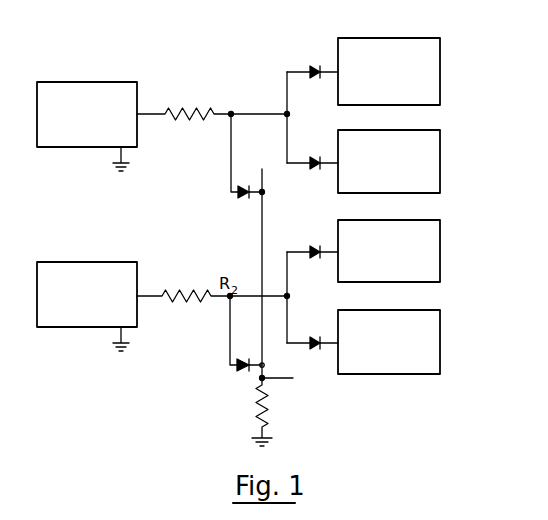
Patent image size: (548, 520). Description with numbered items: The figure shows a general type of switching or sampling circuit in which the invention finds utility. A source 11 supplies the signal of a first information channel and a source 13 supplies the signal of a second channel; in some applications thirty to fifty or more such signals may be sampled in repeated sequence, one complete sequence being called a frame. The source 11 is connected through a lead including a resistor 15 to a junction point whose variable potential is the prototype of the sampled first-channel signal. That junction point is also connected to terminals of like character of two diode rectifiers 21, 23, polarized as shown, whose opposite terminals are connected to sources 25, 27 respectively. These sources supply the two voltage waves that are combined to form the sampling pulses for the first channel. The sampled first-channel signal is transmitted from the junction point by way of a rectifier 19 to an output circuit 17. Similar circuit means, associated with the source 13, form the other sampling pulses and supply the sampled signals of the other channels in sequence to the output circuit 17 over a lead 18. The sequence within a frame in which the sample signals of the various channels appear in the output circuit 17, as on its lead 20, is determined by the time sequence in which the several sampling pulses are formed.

The source 11 is at (67, 82).
The source 13 is at (80, 262).
The resistor 15 is at (165, 111).
The output circuit 17 is at (301, 423).
The lead 18 is at (263, 240).
The rectifier 19 is at (251, 196).
The lead 20 is at (268, 378).
The diode rectifier 21 is at (319, 66).
The diode rectifier 23 is at (316, 157).
The source 25 is at (405, 38).
The source 27 is at (420, 130).